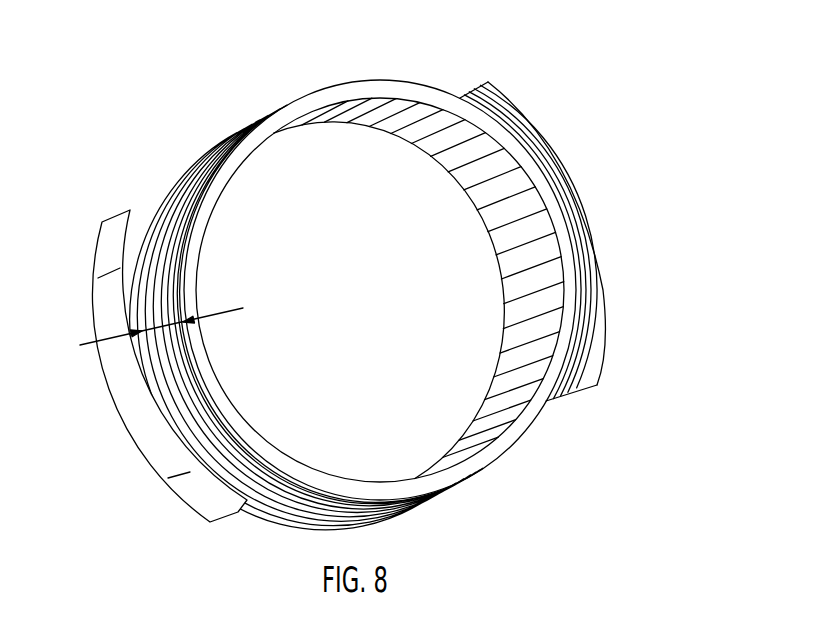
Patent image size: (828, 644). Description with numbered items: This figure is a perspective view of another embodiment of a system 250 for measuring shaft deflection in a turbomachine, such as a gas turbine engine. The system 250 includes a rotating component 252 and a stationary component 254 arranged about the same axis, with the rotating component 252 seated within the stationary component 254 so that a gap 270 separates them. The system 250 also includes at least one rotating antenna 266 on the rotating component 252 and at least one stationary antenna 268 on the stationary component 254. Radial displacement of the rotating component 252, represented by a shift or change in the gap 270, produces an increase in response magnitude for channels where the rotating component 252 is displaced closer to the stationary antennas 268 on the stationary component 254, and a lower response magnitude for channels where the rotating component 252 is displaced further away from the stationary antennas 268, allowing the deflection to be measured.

The system 250 is at (373, 285).
The rotating component 252 is at (300, 113).
The stationary component 254 is at (130, 411).
The rotating antenna 266 is at (170, 227).
The stationary antenna 268 is at (583, 337).
The gap 270 is at (218, 312).